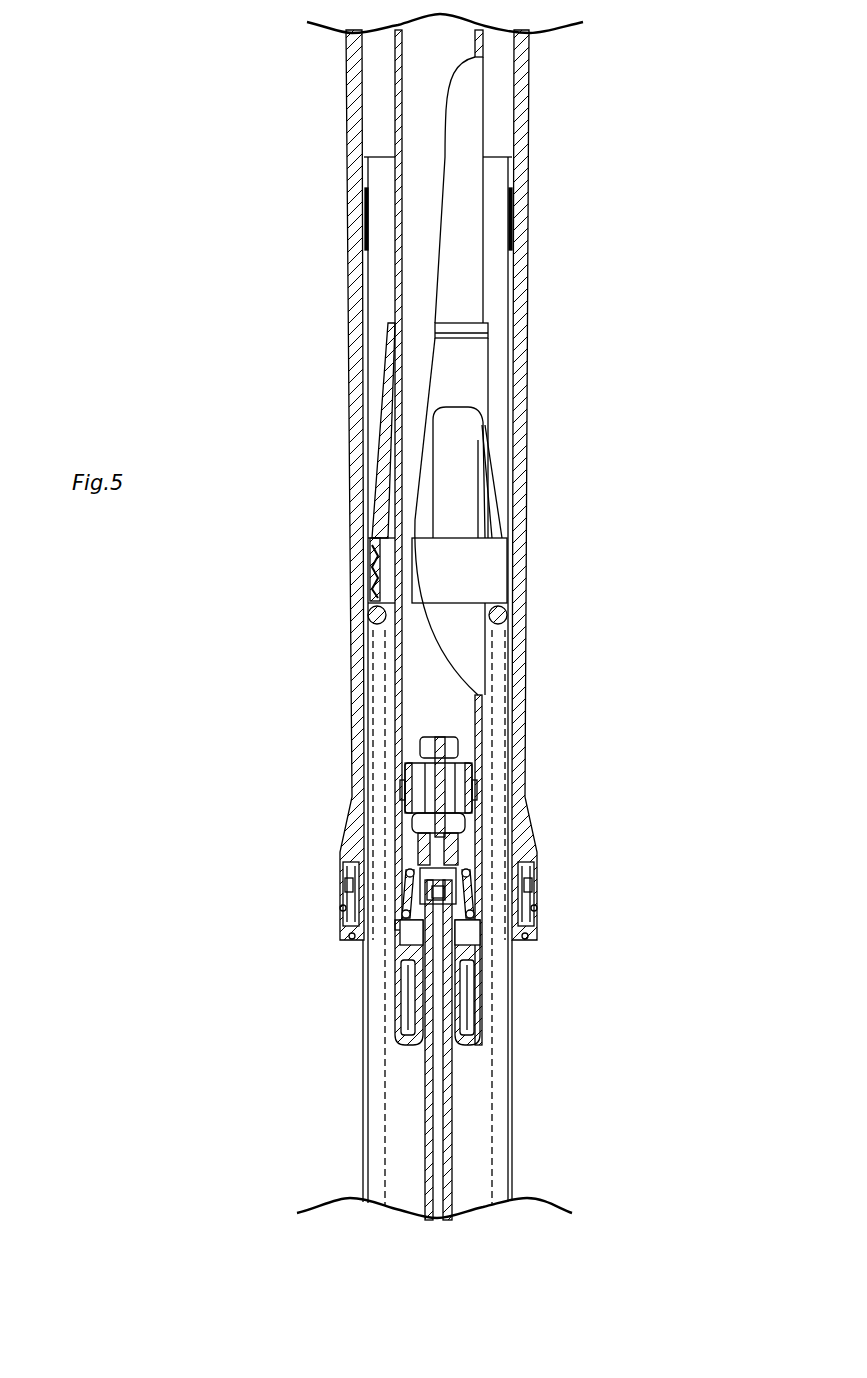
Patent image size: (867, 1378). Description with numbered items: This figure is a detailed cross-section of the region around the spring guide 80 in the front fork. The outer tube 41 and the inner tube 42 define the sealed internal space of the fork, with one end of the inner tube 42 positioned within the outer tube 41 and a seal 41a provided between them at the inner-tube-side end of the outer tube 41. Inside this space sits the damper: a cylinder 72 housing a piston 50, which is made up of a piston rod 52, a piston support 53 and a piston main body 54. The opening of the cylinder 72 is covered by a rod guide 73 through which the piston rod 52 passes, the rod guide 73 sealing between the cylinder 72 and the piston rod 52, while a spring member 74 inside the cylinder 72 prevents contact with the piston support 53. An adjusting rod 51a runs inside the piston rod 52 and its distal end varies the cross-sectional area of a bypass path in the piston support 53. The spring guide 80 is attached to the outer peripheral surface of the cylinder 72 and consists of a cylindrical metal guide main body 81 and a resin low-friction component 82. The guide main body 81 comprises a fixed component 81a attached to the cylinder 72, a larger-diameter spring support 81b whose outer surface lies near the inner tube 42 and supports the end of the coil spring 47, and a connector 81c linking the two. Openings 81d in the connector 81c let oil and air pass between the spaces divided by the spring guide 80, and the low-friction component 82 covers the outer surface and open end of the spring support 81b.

The outer tube 41 is at (371, 485).
The seal 41a is at (340, 890).
The inner tube 42 is at (365, 1070).
The coil spring 47 is at (375, 617).
The piston 50 is at (366, 789).
The adjusting rod 51a is at (420, 1130).
The piston rod 52 is at (437, 1050).
The piston support 53 is at (418, 863).
The piston main body 54 is at (413, 792).
The cylinder 72 is at (395, 265).
The rod guide 73 is at (410, 947).
The spring member 74 is at (467, 875).
The spring guide 80 is at (383, 366).
The guide main body 81 is at (558, 376).
The fixed component 81a is at (465, 373).
The spring support 81b is at (532, 570).
The connector 81c is at (488, 444).
The openings 81d is at (480, 475).
The low-friction component 82 is at (372, 563).